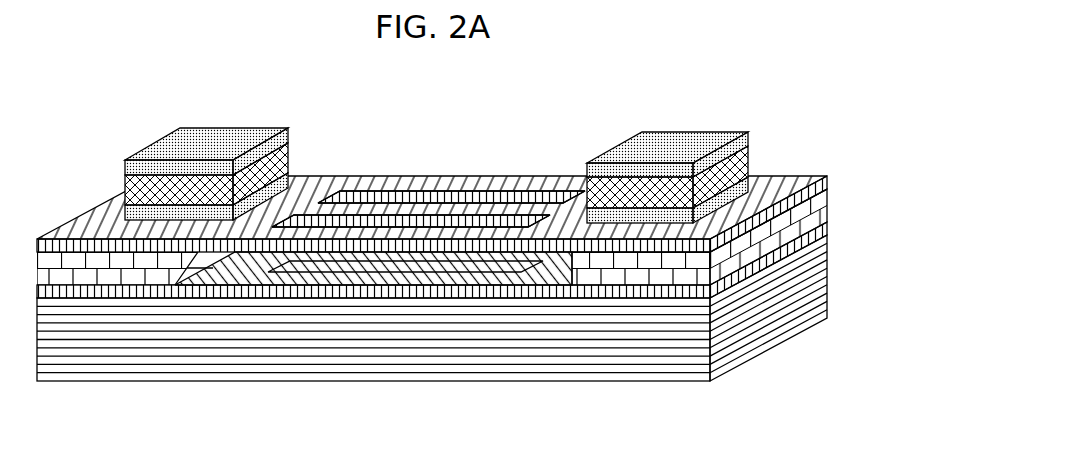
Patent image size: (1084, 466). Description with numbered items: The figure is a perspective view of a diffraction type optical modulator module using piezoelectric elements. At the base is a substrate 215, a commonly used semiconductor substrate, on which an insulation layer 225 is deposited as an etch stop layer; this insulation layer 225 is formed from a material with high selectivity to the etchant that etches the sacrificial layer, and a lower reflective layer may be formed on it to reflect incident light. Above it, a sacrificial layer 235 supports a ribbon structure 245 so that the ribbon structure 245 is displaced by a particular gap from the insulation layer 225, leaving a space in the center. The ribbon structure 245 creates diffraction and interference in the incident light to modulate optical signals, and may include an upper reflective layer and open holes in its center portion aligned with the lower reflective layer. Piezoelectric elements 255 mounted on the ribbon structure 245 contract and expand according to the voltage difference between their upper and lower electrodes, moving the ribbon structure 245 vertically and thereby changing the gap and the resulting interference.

The substrate 215 is at (828, 289).
The insulation layer 225 is at (828, 233).
The sacrificial layer 235 is at (828, 208).
The ribbon structure 245 is at (828, 178).
The piezoelectric element 255 is at (757, 135).